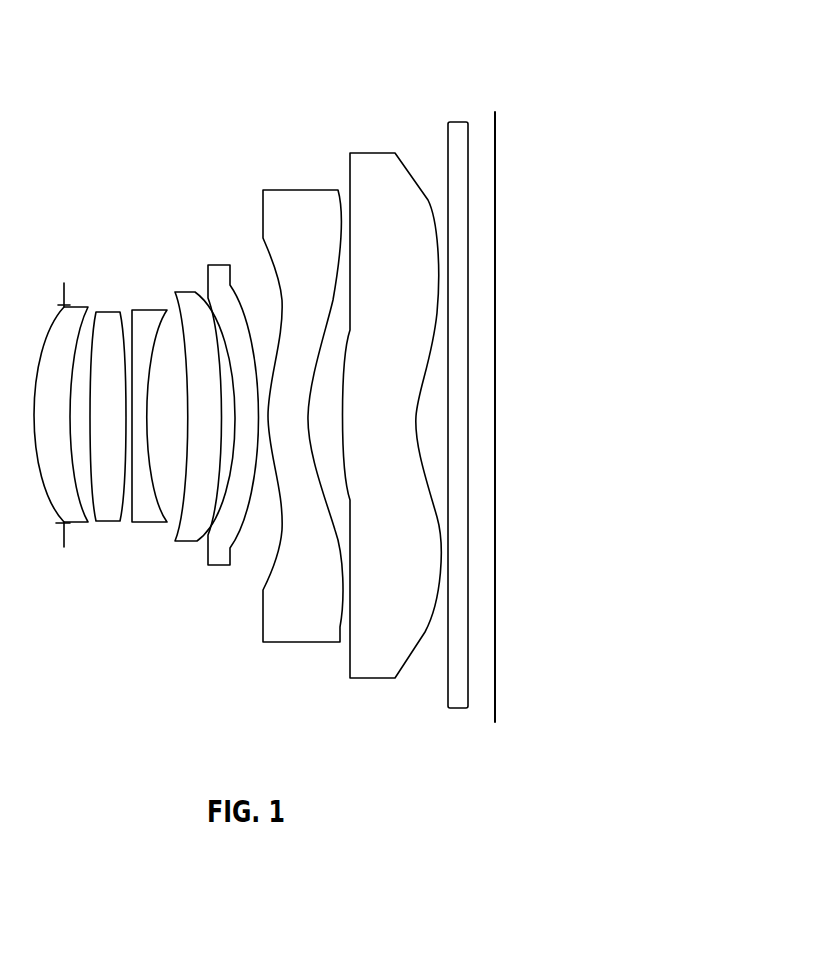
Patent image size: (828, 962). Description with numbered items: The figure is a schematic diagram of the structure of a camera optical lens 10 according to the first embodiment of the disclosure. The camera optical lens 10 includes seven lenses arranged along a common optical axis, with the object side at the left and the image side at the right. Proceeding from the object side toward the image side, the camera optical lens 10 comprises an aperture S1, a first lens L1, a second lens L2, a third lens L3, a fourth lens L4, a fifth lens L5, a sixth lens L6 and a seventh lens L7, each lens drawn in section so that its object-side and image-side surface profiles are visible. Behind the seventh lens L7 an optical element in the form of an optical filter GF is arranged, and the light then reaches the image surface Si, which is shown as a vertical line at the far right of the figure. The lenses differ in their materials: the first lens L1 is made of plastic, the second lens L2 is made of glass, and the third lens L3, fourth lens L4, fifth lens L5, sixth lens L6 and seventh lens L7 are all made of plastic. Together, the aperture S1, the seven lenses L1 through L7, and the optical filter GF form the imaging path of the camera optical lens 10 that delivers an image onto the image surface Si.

The camera optical lens 10 is at (258, 58).
The aperture S1 is at (50, 412).
The first lens L1 is at (63, 400).
The second lens L2 is at (108, 401).
The third lens L3 is at (149, 401).
The fourth lens L4 is at (201, 397).
The fifth lens L5 is at (233, 399).
The sixth lens L6 is at (303, 397).
The seventh lens L7 is at (392, 397).
The optical filter GF is at (460, 398).
The image surface Si is at (499, 399).